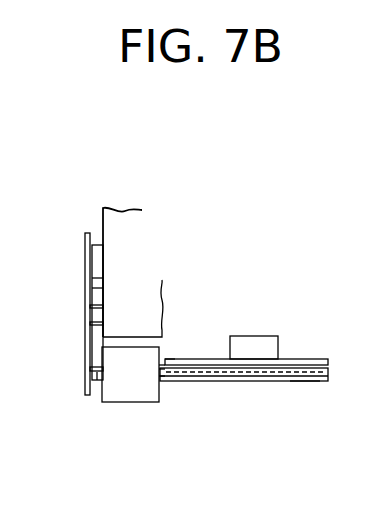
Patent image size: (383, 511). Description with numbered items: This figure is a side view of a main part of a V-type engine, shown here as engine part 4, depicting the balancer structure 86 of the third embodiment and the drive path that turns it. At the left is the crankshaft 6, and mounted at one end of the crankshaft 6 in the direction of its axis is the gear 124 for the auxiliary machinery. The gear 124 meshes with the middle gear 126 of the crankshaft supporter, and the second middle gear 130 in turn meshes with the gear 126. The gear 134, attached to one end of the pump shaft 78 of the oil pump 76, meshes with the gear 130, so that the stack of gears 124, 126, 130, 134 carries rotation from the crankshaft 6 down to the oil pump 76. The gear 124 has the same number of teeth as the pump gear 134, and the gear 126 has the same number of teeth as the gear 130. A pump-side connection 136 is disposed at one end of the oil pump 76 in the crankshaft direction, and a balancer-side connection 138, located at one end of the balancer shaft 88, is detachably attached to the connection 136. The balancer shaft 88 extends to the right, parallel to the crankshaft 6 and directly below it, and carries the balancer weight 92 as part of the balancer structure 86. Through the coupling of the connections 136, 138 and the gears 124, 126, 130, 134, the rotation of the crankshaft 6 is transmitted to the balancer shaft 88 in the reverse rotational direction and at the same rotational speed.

The housing 4 is at (139, 200).
The crankshaft 6 is at (98, 243).
The gear for the auxiliary machinery 124 is at (85, 248).
The middle gear 126 is at (85, 298).
The second middle gear 130 is at (85, 335).
The gear 134 is at (85, 358).
The pump shaft 78 is at (98, 377).
The oil pump 76 is at (123, 408).
The pump-side connection 136 is at (162, 378).
The balancer structure 86 is at (313, 352).
The balancer-side connection 138 is at (172, 358).
The balancer weight 92 is at (250, 336).
The balancer shaft 88 is at (302, 381).